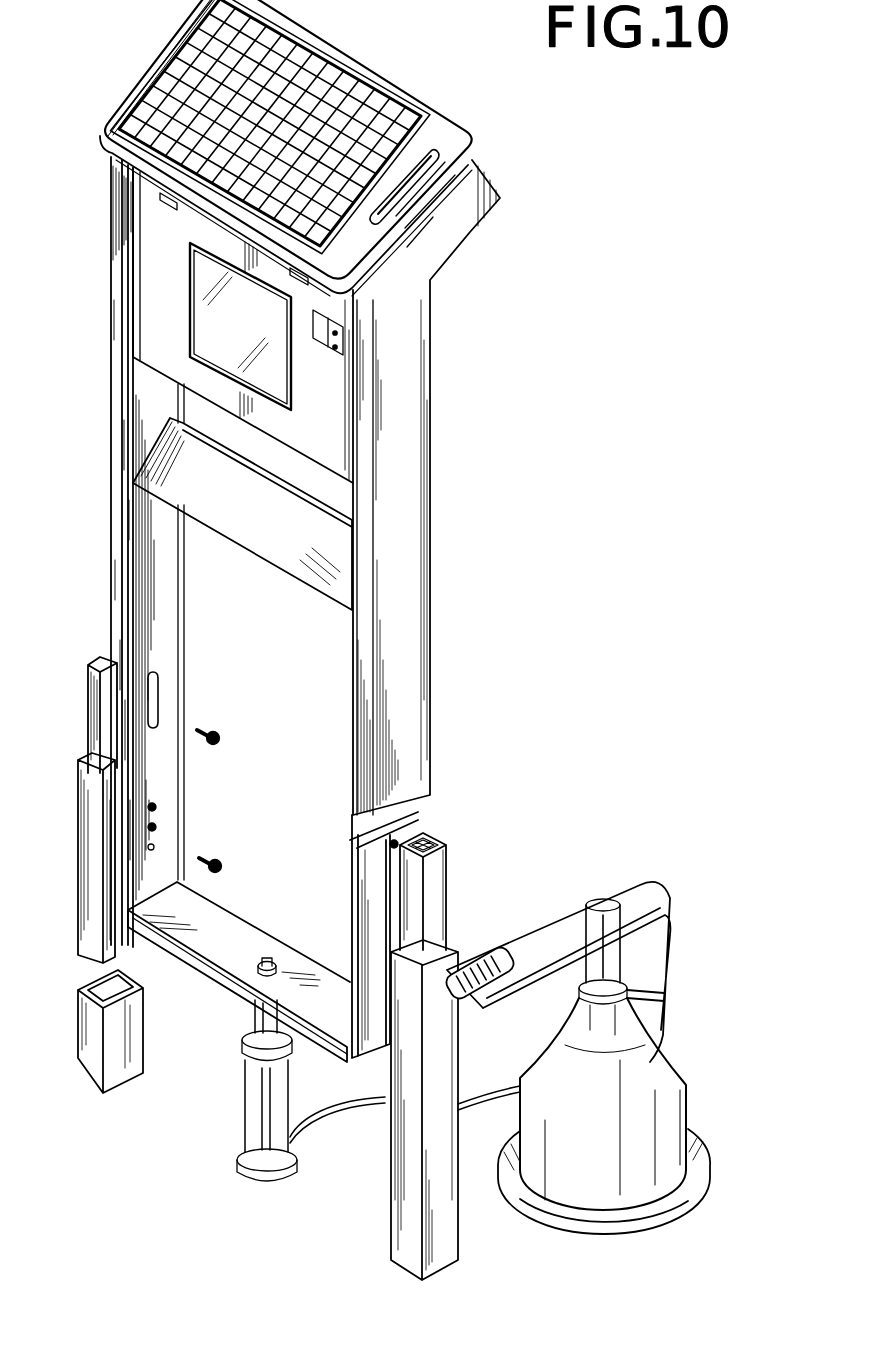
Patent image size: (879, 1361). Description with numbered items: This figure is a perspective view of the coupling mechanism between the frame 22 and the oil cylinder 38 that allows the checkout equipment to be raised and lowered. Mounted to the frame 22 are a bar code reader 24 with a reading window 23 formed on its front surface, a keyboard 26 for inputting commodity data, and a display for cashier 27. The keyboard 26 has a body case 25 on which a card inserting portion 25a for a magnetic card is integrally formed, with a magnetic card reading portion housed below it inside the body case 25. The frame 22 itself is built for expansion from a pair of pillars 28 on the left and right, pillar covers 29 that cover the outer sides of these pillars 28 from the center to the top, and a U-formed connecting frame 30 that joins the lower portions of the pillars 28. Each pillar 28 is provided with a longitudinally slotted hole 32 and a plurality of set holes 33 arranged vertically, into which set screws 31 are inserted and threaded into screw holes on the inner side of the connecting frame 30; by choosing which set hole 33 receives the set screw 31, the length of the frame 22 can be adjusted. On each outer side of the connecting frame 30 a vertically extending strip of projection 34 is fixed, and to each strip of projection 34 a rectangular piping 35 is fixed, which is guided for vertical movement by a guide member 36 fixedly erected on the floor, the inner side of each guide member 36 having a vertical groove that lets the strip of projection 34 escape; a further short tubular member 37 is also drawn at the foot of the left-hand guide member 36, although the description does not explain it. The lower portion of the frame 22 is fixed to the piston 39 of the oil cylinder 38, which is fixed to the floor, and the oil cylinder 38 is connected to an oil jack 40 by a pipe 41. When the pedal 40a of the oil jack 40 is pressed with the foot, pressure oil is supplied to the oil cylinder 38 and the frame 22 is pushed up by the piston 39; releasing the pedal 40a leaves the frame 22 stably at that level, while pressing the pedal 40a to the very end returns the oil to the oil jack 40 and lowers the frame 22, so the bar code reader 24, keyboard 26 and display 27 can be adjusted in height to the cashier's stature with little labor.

The frame 22 is at (148, 398).
The reading window 23 is at (203, 306).
The bar code reader 24 is at (330, 413).
The body case 25 is at (372, 78).
The card inserting portion 25a is at (418, 180).
The keyboard 26 is at (190, 88).
The display for cashier 27 is at (192, 482).
The pillars 28 is at (155, 540).
The pillar covers 29 is at (405, 545).
The connecting frame 30 is at (197, 935).
The set screws 31 is at (220, 735).
The slotted hole 32 is at (182, 677).
The set holes 33 is at (157, 827).
The strip of projection 34 is at (437, 873).
The rectangular piping 35 is at (97, 694).
The guide members 36 is at (97, 794).
The leg sleeve 37 is at (123, 1020).
The oil cylinder 38 is at (262, 1107).
The piston 39 is at (260, 1018).
The oil jack 40 is at (660, 1080).
The pedal 40a is at (490, 957).
The pipe 41 is at (335, 1120).